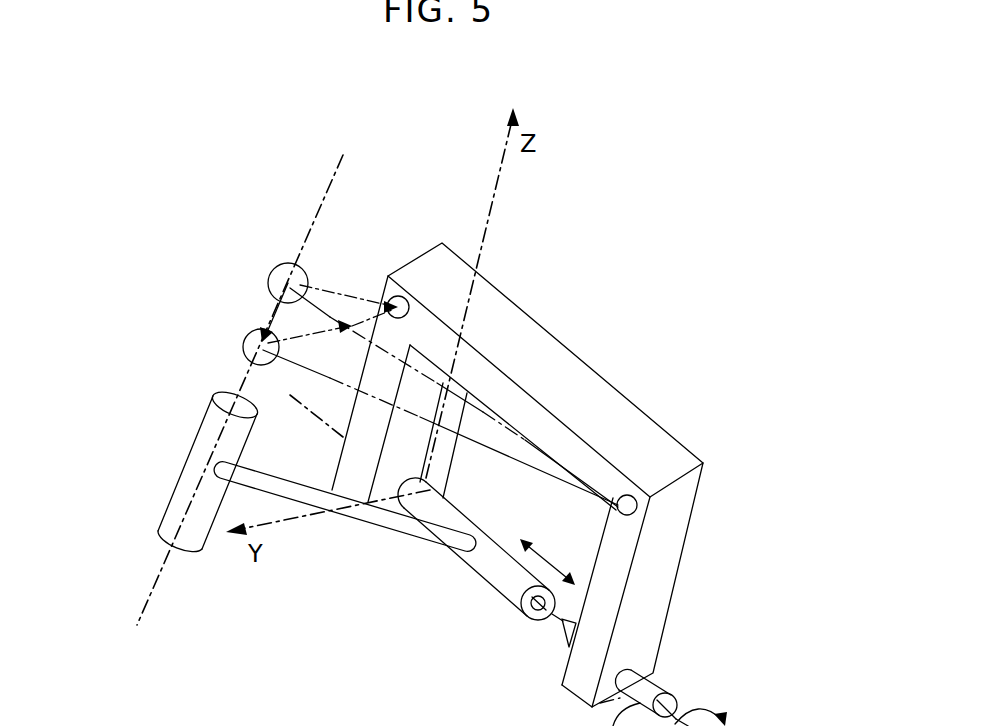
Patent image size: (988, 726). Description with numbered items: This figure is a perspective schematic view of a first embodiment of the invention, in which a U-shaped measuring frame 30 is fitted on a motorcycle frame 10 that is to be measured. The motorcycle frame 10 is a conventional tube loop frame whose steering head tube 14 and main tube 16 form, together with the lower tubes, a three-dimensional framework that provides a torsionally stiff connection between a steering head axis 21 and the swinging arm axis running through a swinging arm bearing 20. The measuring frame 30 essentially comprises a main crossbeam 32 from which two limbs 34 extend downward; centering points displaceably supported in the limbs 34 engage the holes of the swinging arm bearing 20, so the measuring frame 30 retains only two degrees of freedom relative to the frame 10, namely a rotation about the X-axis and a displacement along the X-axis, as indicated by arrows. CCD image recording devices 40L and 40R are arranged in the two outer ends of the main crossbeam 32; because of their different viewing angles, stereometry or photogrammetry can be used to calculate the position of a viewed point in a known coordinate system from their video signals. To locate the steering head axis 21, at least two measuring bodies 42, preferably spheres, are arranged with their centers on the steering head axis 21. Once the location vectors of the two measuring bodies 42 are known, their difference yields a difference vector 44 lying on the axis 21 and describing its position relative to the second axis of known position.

The motorcycle frame 10 is at (477, 597).
The steering head tube 14 is at (198, 543).
The main tube 16 is at (345, 517).
The swinging arm bearing 20 is at (470, 558).
The steering head axis 21 is at (338, 178).
The measuring frame 30 is at (563, 475).
The main crossbeam 32 is at (578, 368).
The limbs 34 is at (650, 616).
The CCD image recording device 40R is at (400, 296).
The CCD image recording device 40L is at (638, 506).
The measuring bodies 42 is at (272, 278).
The difference vector 44 is at (253, 331).